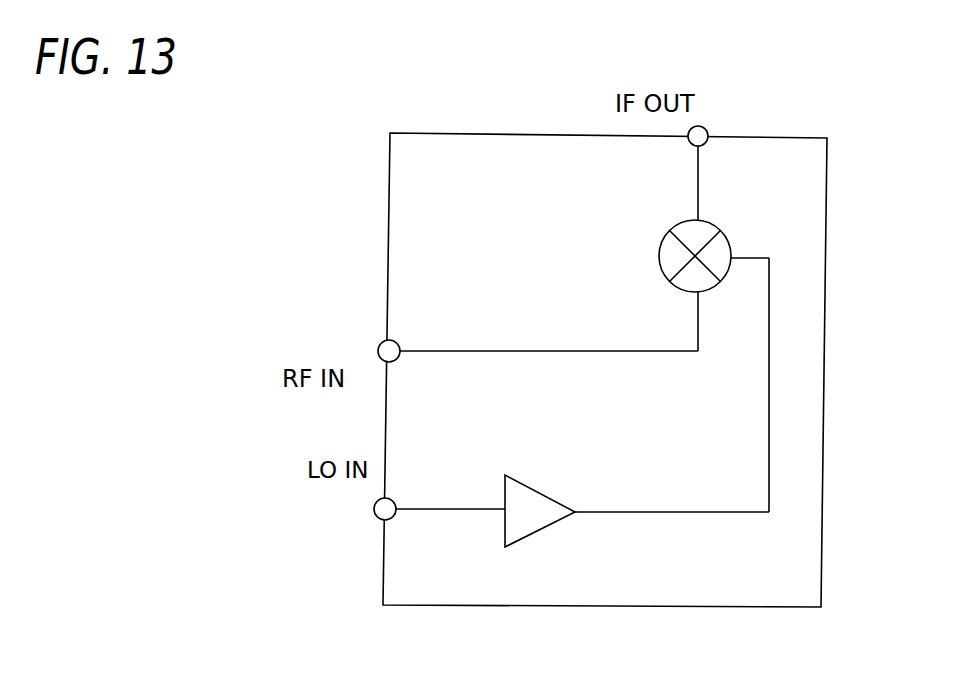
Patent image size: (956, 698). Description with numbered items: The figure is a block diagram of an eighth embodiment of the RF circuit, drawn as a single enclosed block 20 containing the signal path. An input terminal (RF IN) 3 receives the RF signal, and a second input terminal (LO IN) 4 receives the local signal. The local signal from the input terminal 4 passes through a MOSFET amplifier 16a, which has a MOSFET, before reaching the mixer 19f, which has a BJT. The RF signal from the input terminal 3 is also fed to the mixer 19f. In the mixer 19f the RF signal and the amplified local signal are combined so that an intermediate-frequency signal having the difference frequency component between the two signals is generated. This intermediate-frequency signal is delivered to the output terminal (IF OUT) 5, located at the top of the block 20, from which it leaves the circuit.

The semiconductor substrate / chip 20 is at (797, 610).
The output terminal (IF OUT) 5 is at (707, 131).
The input terminal (RF IN) 3 is at (380, 348).
The input terminal (LO IN) 4 is at (377, 513).
The mixer 19f is at (667, 278).
The MOSFET amplifier 16a is at (543, 528).